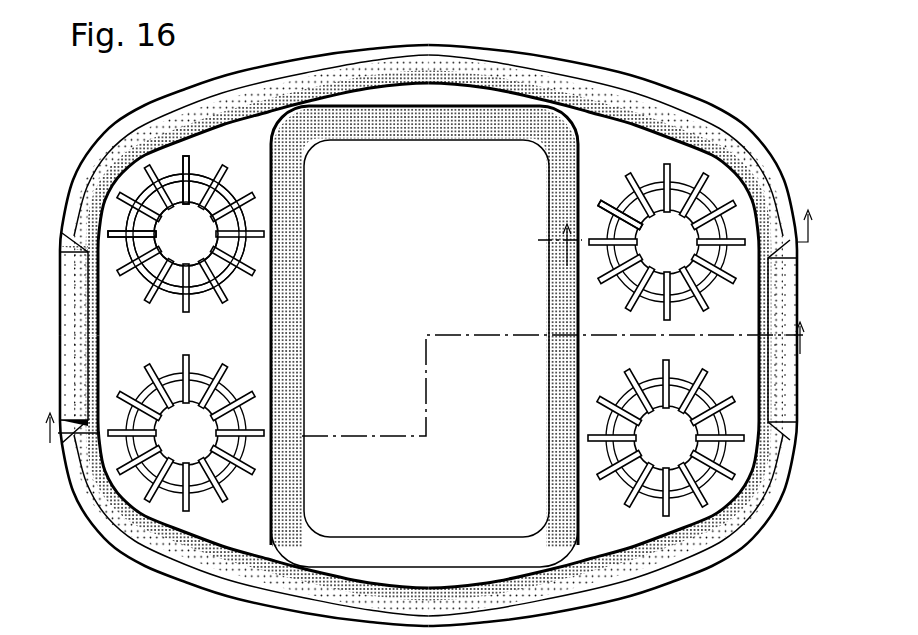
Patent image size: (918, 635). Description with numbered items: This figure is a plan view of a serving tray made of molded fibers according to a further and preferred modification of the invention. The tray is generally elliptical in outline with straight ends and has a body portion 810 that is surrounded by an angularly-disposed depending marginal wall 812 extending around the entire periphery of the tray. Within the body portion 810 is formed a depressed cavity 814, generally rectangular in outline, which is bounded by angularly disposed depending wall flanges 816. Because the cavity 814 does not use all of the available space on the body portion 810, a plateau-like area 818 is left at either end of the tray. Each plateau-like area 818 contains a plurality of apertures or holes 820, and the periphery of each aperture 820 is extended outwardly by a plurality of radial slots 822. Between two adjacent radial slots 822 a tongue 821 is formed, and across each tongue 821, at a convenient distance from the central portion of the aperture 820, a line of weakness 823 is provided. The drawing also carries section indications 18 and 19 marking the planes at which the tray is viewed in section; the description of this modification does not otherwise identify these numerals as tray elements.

The body portion 810 is at (242, 123).
The depending marginal wall 812 is at (132, 152).
The depressed cavity 814 is at (440, 275).
The depending wall flanges 816 is at (306, 231).
The plateau-like area 818 is at (212, 349).
The aperture 820 is at (172, 252).
The tongue 821 is at (199, 192).
The radial slot 822 is at (136, 286).
The line of weakness 823 is at (228, 194).
The section line 18- 18 is at (426, 383).
The section line 19- 19 is at (666, 225).